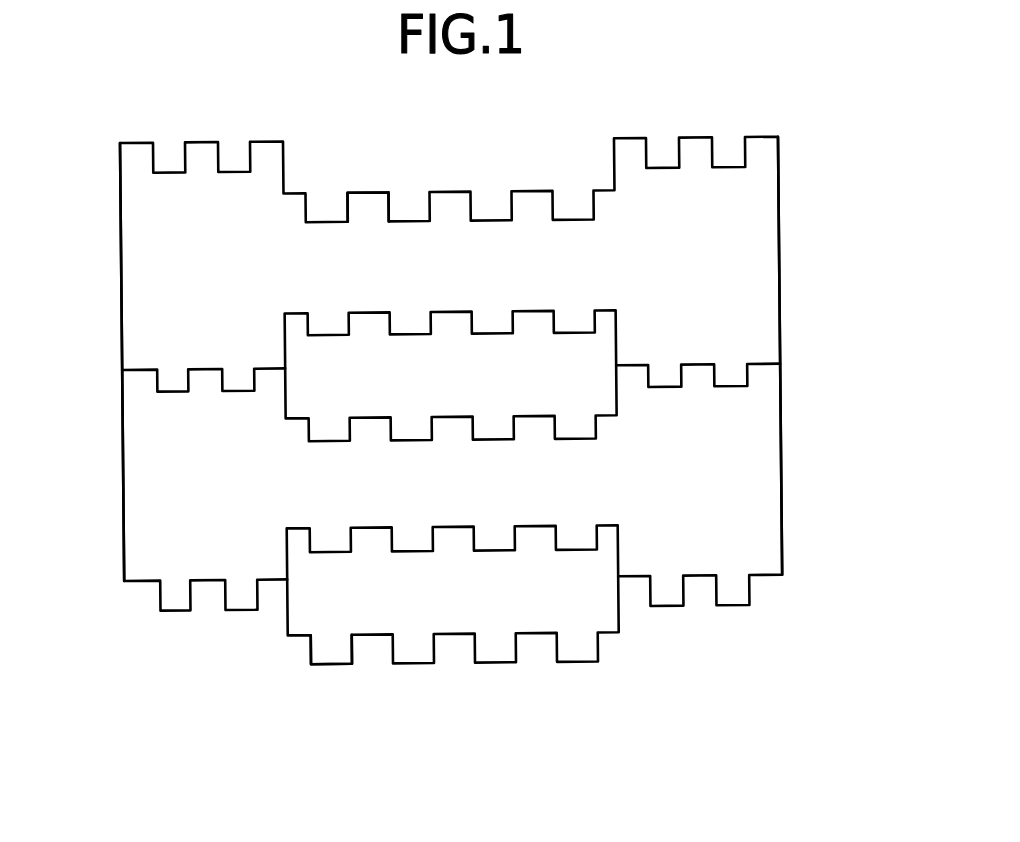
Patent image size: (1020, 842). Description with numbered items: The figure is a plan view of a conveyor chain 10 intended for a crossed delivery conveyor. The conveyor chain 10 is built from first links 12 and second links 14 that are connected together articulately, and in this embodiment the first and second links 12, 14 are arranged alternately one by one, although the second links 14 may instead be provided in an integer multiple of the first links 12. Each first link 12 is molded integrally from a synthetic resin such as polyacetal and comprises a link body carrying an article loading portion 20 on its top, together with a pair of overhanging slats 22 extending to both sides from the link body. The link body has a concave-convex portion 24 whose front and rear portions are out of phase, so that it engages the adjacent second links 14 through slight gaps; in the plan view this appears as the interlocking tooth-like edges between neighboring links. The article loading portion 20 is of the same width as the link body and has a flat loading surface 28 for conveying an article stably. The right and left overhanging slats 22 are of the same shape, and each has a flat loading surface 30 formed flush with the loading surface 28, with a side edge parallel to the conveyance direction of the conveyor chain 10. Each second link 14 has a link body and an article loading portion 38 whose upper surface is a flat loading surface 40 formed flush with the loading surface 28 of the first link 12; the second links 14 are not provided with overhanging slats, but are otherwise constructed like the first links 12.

The conveyor chain 10 is at (793, 155).
The first link 12 is at (783, 282).
The second link 14 is at (622, 620).
The article loading portion 20 is at (398, 262).
The overhanging slat 22 is at (140, 238).
The concave-convex portion 24 is at (363, 198).
The loading surface 28 is at (488, 284).
The loading surface 30 is at (233, 283).
The article loading portion 38 is at (418, 600).
The loading surface 40 is at (488, 389).